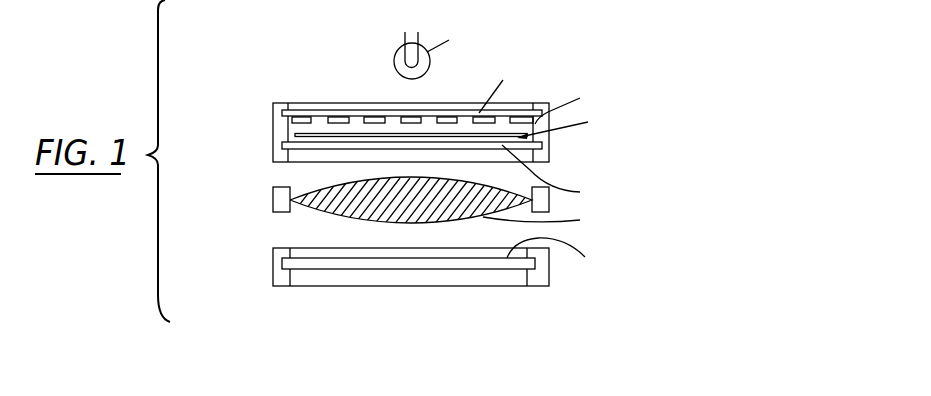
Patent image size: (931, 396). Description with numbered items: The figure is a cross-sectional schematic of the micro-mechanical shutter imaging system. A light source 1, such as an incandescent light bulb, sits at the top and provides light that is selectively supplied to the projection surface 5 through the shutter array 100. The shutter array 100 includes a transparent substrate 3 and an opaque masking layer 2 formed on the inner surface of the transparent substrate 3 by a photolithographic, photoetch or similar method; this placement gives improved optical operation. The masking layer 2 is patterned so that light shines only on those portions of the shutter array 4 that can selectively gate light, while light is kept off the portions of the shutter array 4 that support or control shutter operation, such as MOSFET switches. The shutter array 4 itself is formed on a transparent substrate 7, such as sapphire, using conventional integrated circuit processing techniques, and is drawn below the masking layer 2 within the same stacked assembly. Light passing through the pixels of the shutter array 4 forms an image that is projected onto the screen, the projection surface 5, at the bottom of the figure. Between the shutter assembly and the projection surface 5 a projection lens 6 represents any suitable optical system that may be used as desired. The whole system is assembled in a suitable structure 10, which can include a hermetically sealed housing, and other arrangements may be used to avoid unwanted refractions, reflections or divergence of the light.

The shutter array 100 is at (295, 72).
The light source 1 is at (396, 53).
The transparent substrate 3 is at (283, 112).
The structure 10 is at (300, 121).
The opaque masking layer 2 is at (304, 124).
The shutter array 4 is at (311, 135).
The transparent substrate 7 is at (327, 146).
The projection lens 6 is at (345, 215).
The projection surface 5 is at (290, 265).